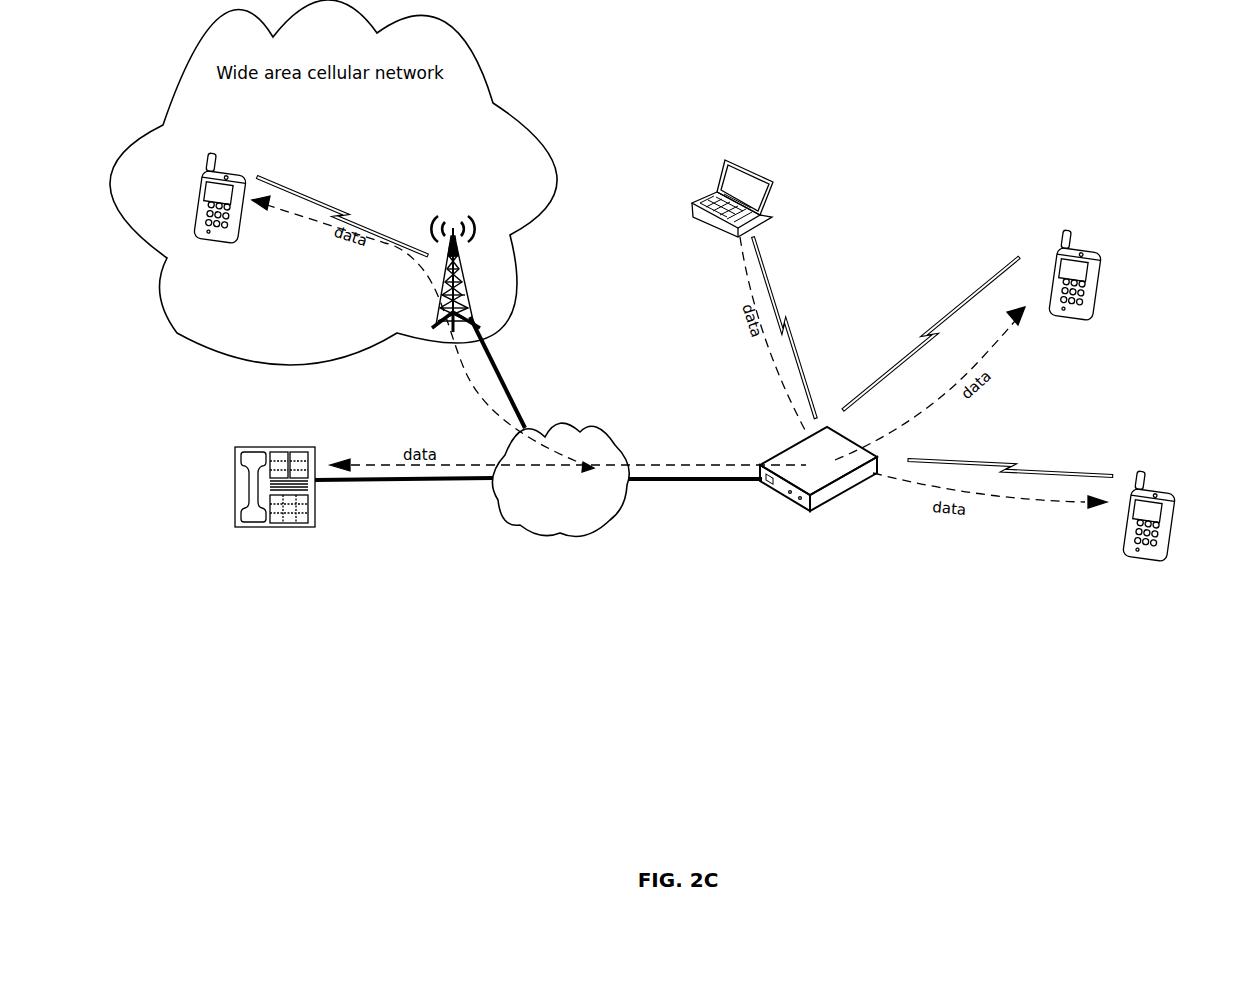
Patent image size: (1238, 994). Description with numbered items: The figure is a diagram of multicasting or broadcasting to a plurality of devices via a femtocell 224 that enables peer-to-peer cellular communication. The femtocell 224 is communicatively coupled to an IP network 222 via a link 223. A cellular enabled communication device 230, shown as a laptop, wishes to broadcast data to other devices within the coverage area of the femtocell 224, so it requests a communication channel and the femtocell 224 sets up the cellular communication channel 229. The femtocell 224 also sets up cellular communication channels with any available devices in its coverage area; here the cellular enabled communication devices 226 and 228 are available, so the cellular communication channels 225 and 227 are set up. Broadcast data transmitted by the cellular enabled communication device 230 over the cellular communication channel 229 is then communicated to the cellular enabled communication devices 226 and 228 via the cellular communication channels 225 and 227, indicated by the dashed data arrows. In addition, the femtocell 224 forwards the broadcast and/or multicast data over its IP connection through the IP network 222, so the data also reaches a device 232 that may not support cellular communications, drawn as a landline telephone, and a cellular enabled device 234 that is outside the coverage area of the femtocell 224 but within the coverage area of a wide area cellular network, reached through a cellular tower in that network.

The IP network 222 is at (553, 423).
The link 223 is at (693, 482).
The femtocell 224 is at (793, 445).
The cellular communication channel 225 is at (977, 303).
The cellular enabled communication device 226 is at (1077, 247).
The cellular communication channel 227 is at (1067, 467).
The cellular enabled communication device 228 is at (1157, 490).
The cellular communication channel 229 is at (780, 292).
The cellular enabled communication device 230 is at (743, 162).
The device 232 is at (248, 447).
The device 234 is at (223, 167).